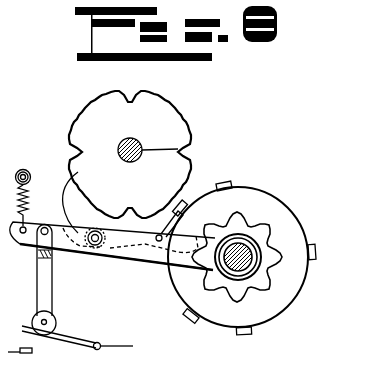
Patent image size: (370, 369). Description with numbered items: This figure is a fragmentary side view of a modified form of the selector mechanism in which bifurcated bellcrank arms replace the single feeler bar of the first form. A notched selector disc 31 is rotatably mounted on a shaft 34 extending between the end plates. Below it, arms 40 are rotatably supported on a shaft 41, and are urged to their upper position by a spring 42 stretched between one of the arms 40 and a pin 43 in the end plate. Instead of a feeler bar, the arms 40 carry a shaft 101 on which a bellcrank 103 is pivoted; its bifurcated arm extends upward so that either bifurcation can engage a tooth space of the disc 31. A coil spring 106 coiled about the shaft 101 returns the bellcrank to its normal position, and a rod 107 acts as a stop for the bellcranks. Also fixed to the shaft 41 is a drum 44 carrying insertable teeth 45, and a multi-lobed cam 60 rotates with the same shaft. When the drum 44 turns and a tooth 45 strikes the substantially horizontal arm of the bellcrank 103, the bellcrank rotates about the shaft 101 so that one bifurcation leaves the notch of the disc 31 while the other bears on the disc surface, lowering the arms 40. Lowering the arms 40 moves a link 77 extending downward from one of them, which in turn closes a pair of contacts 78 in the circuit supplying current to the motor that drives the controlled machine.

The notched selector disc 31 is at (183, 116).
The shaft 34 is at (186, 148).
The arms 40 is at (60, 243).
The shaft 41 is at (252, 255).
The spring 42 is at (30, 210).
The pin 43 is at (28, 168).
The drum 44 is at (290, 306).
The teeth 45 is at (188, 203).
The multi-lobed cam 60 is at (252, 226).
The link 77 is at (52, 306).
The contacts 78 is at (32, 337).
The shaft 101 is at (95, 250).
The bellcrank 103 is at (134, 256).
The coil spring 106 is at (117, 216).
The rod 107 is at (165, 229).